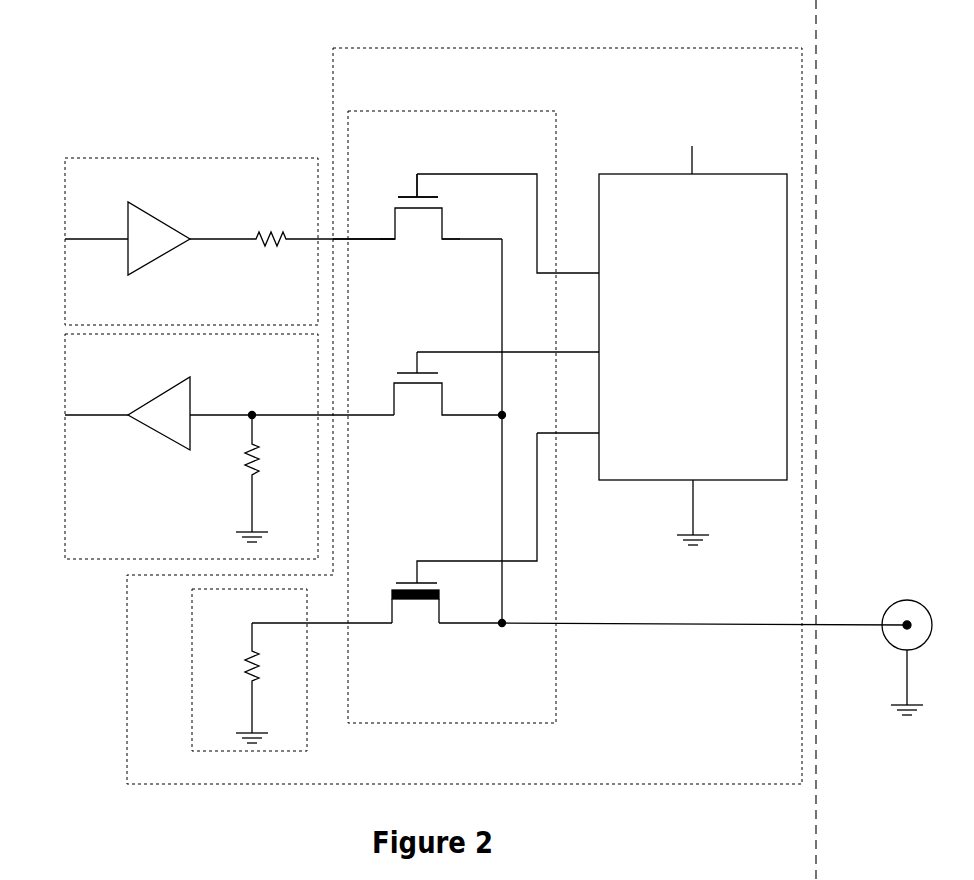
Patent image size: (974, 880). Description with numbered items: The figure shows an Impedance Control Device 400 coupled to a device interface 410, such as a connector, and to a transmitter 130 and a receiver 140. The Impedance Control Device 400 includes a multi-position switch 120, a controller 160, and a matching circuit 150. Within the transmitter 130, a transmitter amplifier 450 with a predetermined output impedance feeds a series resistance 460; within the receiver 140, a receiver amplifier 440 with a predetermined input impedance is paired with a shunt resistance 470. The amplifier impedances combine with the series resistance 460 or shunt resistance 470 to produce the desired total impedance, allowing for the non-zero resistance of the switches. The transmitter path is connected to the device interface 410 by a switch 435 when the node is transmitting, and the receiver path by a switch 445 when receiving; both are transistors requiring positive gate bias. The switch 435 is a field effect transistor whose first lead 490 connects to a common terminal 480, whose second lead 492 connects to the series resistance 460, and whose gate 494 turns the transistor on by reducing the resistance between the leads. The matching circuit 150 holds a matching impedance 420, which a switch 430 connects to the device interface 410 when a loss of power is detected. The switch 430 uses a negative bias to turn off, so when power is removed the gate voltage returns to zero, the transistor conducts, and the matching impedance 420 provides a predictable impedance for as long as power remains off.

The Impedance Control Device 400 is at (752, 58).
The multi-position switch 120 is at (452, 716).
The transmitter 130 is at (70, 200).
The receiver 140 is at (70, 385).
The matching circuit 150 is at (197, 638).
The controller 160 is at (710, 472).
The device interface 410 is at (926, 612).
The matching impedance 420 is at (262, 669).
The switch 430 is at (400, 582).
The switch 435 is at (399, 196).
The receiver amplifier 440 is at (150, 401).
The switch 445 is at (388, 381).
The transmitter amplifier 450 is at (166, 222).
The series resistance 460 is at (275, 252).
The shunt resistance 470 is at (262, 465).
The common terminal 480 is at (508, 417).
The first lead 490 is at (445, 232).
The second lead 492 is at (392, 238).
The gate 494 is at (420, 180).